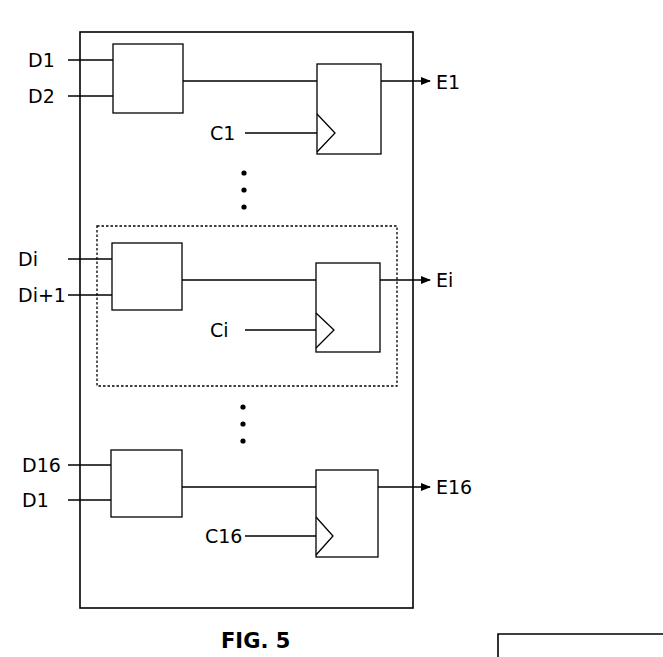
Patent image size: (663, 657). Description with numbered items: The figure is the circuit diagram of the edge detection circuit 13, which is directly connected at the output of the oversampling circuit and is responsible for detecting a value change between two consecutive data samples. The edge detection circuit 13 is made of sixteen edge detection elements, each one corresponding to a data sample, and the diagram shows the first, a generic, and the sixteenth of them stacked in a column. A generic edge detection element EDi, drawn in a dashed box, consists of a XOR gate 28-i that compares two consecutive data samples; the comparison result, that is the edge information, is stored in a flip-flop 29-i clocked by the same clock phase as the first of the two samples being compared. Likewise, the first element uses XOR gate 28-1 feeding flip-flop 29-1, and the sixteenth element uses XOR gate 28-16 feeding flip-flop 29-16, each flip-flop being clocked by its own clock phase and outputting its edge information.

The edge detection circuit 13 is at (563, 183).
The XOR gate 28-1 is at (147, 113).
The XOR gate 28-i is at (146, 310).
The XOR gate 28-16 is at (145, 517).
The flip-flop 29-1 is at (364, 154).
The flip-flop 29-i is at (368, 352).
The flip-flop 29-16 is at (361, 557).
The edge detection element EDi is at (396, 228).